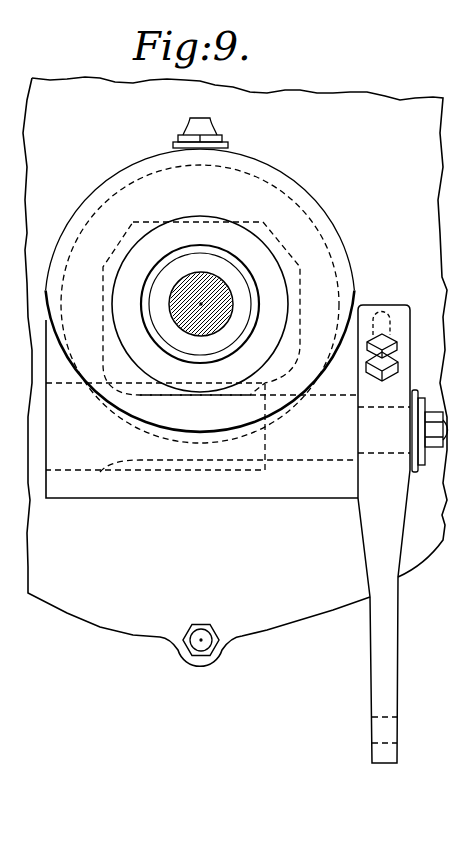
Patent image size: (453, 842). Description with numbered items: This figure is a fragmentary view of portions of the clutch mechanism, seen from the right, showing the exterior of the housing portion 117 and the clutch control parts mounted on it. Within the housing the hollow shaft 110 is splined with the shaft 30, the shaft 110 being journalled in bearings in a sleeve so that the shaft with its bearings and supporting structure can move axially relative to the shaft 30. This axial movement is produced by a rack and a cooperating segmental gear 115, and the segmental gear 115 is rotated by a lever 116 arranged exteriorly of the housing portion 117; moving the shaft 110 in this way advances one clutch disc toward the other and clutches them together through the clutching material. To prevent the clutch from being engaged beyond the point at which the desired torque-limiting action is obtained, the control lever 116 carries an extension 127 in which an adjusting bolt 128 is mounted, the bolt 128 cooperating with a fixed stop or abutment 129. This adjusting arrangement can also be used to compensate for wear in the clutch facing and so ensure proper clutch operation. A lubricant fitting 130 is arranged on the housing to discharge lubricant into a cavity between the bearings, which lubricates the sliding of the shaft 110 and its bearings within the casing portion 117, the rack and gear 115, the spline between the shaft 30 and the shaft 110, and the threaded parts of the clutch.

The shaft 30 is at (223, 300).
The hollow shaft 110 is at (188, 265).
The segmental gear 115 is at (237, 467).
The lever 116 is at (383, 673).
The housing portion 117 is at (118, 423).
The extension 127 is at (405, 303).
The adjusting bolt 128 is at (383, 381).
The fixed stop 129 is at (367, 357).
The lubricant fitting 130 is at (197, 128).